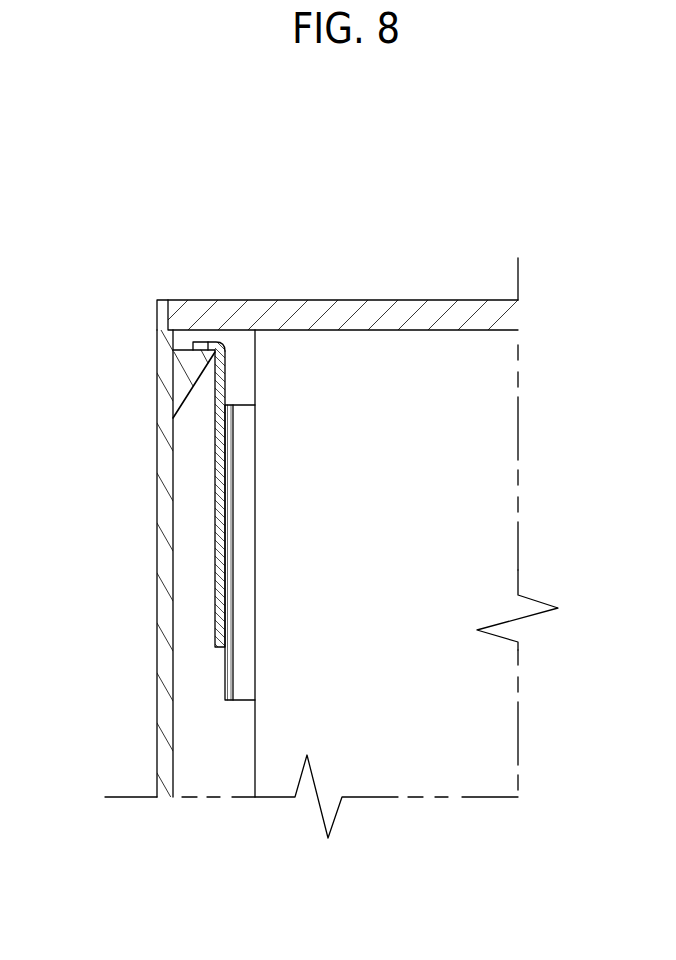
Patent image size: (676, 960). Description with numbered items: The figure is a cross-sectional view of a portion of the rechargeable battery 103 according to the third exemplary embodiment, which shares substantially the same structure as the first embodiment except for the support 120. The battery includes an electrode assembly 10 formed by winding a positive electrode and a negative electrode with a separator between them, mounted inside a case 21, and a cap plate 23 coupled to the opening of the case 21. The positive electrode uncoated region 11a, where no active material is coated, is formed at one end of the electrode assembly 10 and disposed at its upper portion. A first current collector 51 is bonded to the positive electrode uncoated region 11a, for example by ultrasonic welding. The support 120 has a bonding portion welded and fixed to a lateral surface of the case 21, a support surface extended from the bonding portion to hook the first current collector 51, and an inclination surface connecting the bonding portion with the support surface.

The rechargeable battery 103 is at (352, 268).
The cap plate 23 is at (442, 316).
The case 21 is at (167, 618).
The support 120 is at (185, 368).
The first current collector 51 is at (215, 518).
The positive electrode uncoated region 11a is at (238, 678).
The electrode assembly 10 is at (404, 737).